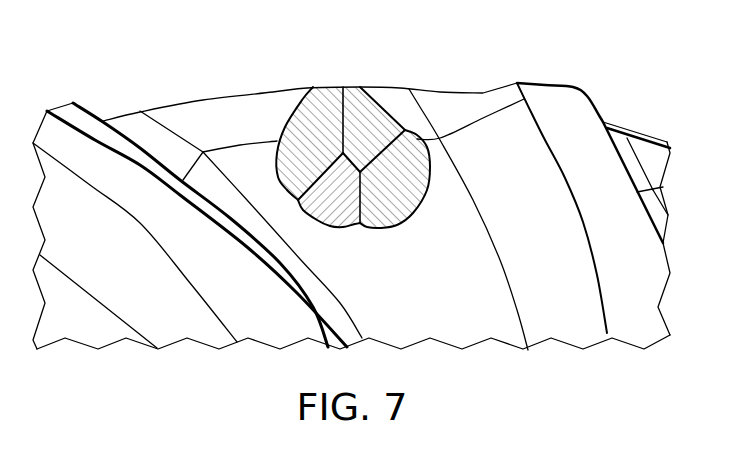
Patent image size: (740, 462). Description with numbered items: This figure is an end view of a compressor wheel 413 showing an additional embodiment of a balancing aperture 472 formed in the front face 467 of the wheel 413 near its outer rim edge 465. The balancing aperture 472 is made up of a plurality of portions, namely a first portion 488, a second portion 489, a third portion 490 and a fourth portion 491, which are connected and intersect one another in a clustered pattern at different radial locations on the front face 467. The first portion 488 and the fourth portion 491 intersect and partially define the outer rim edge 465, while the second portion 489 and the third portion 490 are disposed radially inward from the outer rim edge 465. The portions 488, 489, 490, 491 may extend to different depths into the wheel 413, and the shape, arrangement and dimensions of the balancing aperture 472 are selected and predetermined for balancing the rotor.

The wheel 413 is at (568, 191).
The outer rim edge 465 is at (178, 100).
The front face 467 is at (412, 319).
The balancing aperture 472 is at (379, 98).
The first portion 488 is at (313, 110).
The second portion 489 is at (342, 220).
The third portion 490 is at (410, 200).
The fourth portion 491 is at (393, 122).